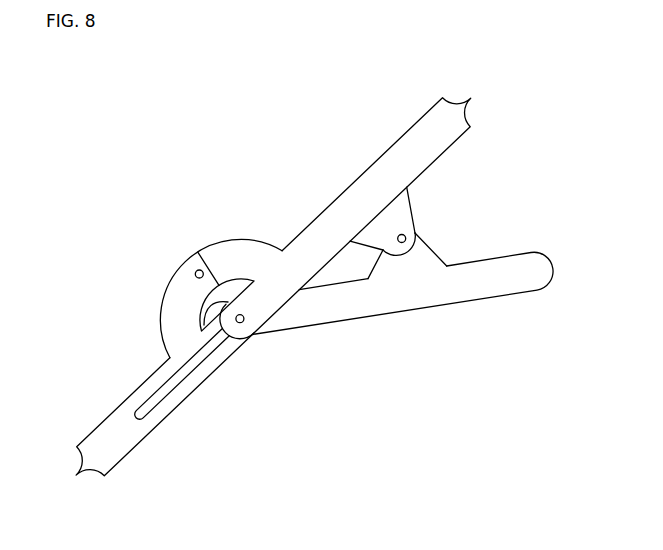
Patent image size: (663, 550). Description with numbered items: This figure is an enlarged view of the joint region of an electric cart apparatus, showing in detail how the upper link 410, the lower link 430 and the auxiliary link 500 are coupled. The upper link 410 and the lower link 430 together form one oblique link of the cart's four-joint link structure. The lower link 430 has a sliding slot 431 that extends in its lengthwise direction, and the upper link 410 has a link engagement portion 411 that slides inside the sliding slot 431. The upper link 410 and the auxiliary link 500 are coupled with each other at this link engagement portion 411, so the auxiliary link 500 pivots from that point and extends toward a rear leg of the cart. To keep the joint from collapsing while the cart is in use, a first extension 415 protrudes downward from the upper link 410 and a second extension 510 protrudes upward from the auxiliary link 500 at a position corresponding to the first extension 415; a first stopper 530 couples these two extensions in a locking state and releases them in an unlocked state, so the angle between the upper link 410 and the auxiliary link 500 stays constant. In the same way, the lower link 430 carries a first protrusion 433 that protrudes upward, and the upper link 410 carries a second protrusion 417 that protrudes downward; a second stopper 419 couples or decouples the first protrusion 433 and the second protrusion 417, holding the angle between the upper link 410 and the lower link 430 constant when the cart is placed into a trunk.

The upper link 410 is at (431, 130).
The link engagement portion 411 is at (244, 320).
The first extension 415 is at (397, 208).
The second protrusion 417 is at (245, 250).
The second stopper 419 is at (195, 266).
The lower link 430 is at (114, 448).
The sliding slot 431 is at (157, 397).
The first protrusion 433 is at (175, 300).
The auxiliary link 500 is at (468, 285).
The second extension 510 is at (427, 262).
The first stopper 530 is at (414, 232).